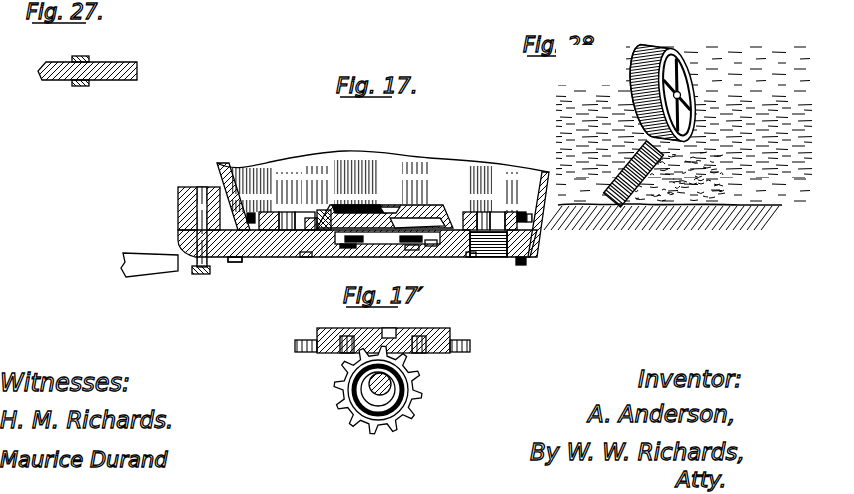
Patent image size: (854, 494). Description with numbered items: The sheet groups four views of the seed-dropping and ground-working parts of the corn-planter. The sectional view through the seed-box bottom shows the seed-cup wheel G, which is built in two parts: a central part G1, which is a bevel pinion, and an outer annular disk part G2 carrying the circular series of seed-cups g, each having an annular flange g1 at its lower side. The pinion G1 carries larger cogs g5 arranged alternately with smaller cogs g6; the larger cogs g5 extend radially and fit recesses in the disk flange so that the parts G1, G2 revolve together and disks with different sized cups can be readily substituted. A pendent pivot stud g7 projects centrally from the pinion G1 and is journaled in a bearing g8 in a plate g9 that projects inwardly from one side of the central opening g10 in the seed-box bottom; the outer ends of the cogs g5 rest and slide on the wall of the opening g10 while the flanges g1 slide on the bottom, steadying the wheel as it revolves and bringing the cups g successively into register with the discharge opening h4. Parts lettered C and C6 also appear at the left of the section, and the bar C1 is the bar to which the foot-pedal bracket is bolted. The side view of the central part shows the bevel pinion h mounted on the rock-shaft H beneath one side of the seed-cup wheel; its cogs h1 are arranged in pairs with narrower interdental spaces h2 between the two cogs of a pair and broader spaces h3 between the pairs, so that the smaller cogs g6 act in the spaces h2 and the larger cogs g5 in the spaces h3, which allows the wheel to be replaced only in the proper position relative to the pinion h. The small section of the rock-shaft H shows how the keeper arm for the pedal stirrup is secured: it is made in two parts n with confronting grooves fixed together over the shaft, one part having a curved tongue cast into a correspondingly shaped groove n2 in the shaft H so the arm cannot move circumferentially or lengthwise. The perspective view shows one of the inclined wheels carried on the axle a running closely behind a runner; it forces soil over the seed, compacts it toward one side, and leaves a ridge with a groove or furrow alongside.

In FIG. 27, the parts of arm N n is at (86, 57).
In FIG. 27, the groove n2 is at (74, 56).
In FIG. 27, the rock-shaft H is at (40, 74).
In FIG. 17′, the rock-shaft H is at (398, 385).
In FIG. 17, the rail C is at (146, 258).
In FIG. 17, the bar C1 is at (180, 201).
In FIG. 17, the frame wedge C6 is at (207, 188).
In FIG. 17, the seed-cup wheel G is at (327, 205).
In FIG. 17, the central part of seed-cup wheel G1 is at (425, 210).
In FIG. 17′, the central part of seed-cup wheel G1 is at (393, 332).
In FIG. 17, the outer annular disk part G2 is at (514, 212).
In FIG. 17, the seed-cups g is at (289, 212).
In FIG. 17, the annular flanges g1 is at (538, 255).
In FIG. 17, the larger cogs g5 is at (305, 258).
In FIG. 17′, the larger cogs g5 is at (335, 330).
In FIG. 17′, the smaller cogs g6 is at (389, 330).
In FIG. 17, the pendent pivot stud g7 is at (380, 232).
In FIG. 17, the bearing g8 is at (372, 258).
In FIG. 17, the plate (bearing bar) g9 is at (440, 258).
In FIG. 17, the central opening in seed-box bottom g10 is at (229, 262).
In FIG. 17′, the bevel pinion h is at (352, 412).
In FIG. 17′, the cogs h1 is at (338, 397).
In FIG. 17′, the narrower interdental spaces h2 is at (382, 426).
In FIG. 17′, the broader interdental spaces h3 is at (340, 384).
In FIG. 17, the opening in seed-box bottom h4 is at (487, 258).
In FIG. 28, the axle a is at (677, 55).